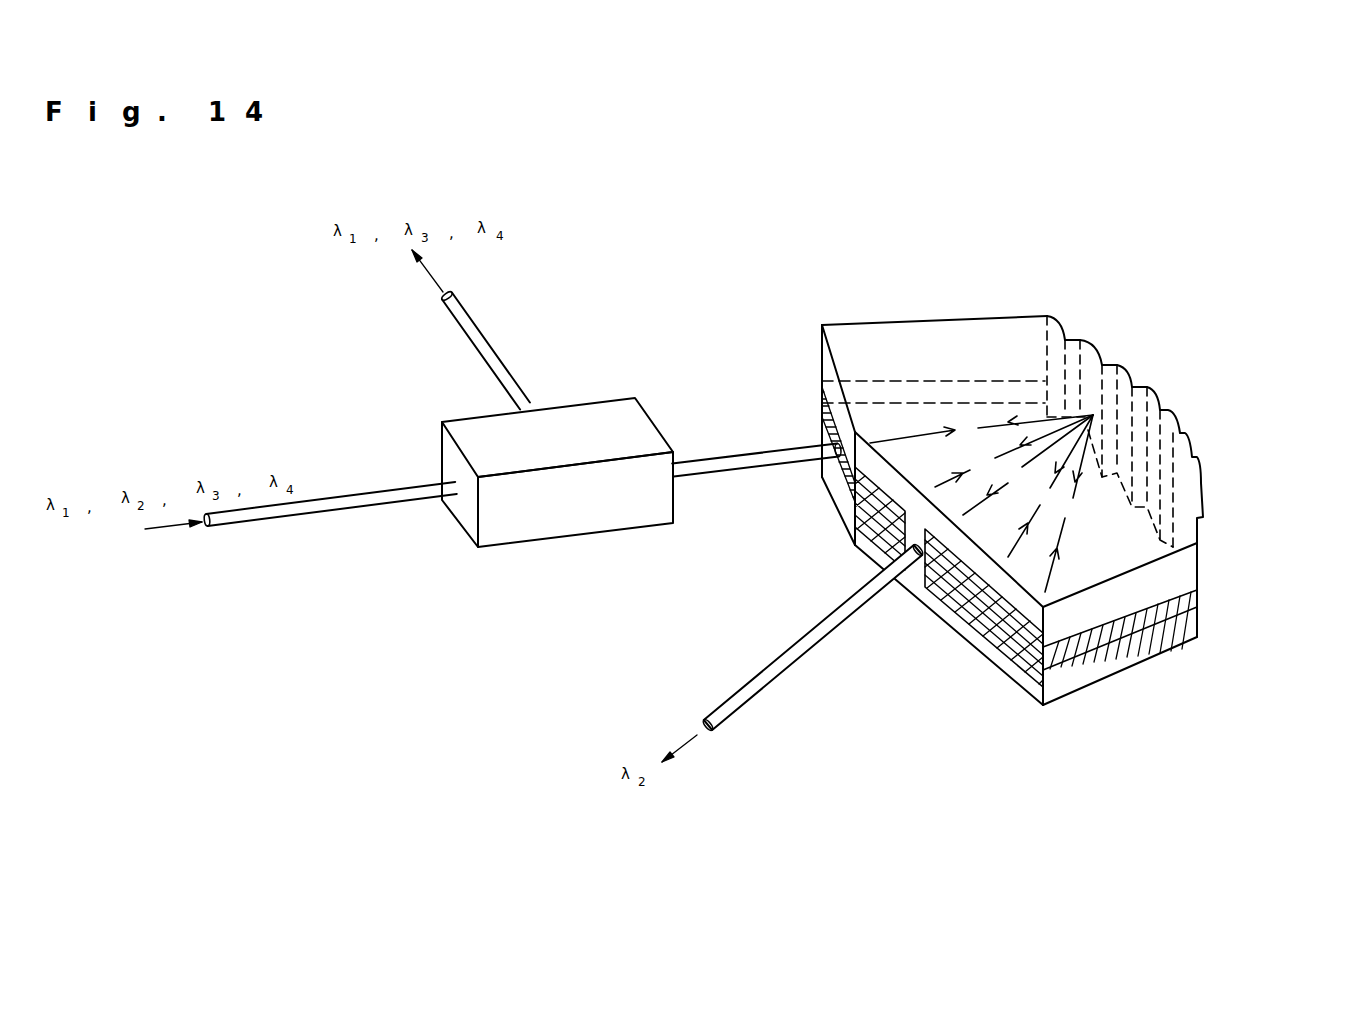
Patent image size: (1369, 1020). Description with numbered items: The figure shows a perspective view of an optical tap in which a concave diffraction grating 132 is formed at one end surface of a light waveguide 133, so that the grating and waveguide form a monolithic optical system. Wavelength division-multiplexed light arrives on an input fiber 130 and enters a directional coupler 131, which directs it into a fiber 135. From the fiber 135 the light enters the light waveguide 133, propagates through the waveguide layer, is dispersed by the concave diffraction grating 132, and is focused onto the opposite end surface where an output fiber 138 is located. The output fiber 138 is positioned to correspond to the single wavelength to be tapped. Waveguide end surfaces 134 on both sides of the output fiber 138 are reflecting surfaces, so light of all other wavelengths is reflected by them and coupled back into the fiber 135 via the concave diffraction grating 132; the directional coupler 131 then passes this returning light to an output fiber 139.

The input fiber 130 is at (288, 517).
The directional coupler 131 is at (560, 537).
The concave diffraction grating 132 is at (1130, 365).
The light waveguide 133 is at (1198, 598).
The waveguide end surfaces 134 is at (1003, 668).
The fiber 135 is at (732, 455).
The output fiber 138 is at (798, 658).
The output fiber 139 is at (505, 373).